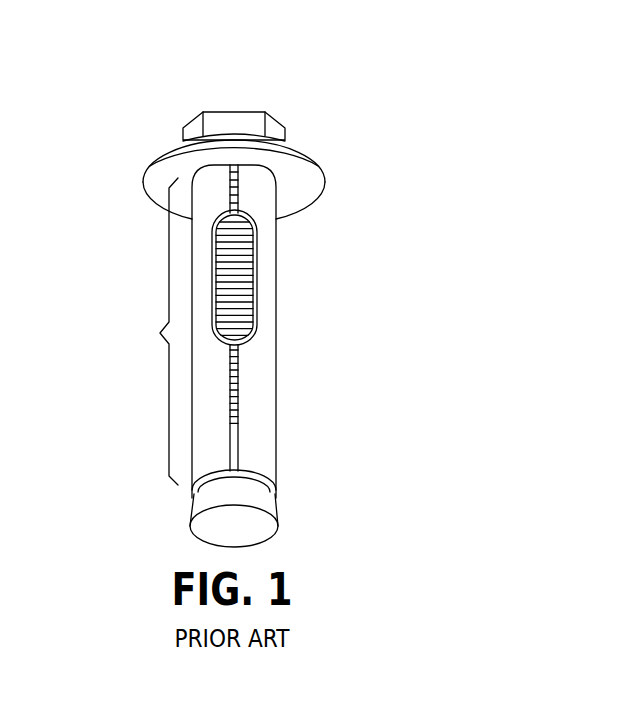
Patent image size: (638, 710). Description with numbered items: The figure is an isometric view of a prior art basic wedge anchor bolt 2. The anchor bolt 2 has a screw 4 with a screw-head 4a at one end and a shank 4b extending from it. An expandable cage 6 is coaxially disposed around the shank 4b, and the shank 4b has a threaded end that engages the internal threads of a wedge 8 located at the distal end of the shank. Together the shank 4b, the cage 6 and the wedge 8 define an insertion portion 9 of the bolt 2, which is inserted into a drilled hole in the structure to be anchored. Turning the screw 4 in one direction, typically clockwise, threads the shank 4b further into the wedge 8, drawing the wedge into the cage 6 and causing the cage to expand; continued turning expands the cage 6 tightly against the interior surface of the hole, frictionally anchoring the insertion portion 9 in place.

The wedge anchor bolt 2 is at (121, 129).
The screw 4 is at (276, 116).
The screw-head 4a is at (236, 112).
The shank 4b is at (246, 277).
The expandable cage 6 is at (277, 402).
The wedge 8 is at (277, 511).
The insertion portion 9 is at (159, 331).